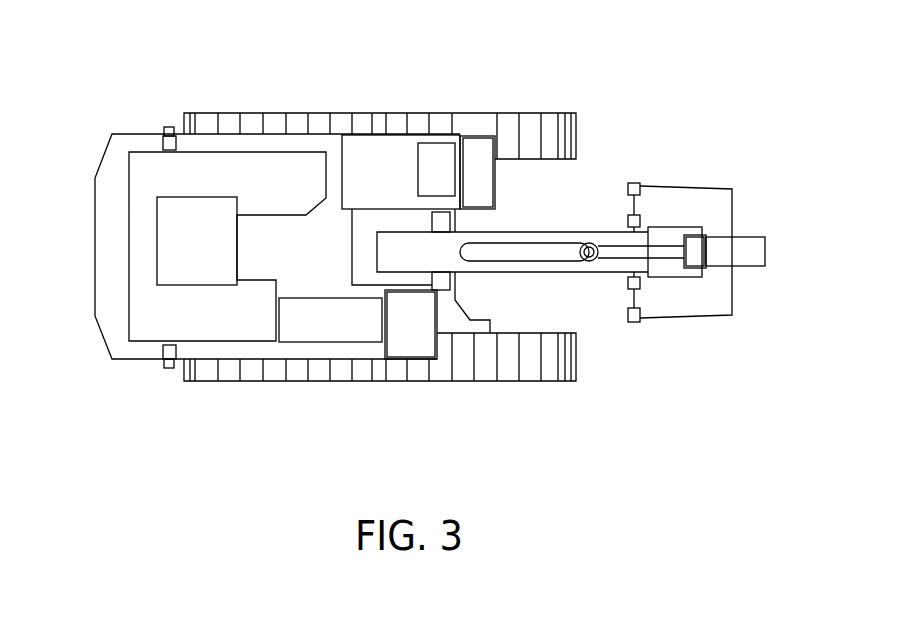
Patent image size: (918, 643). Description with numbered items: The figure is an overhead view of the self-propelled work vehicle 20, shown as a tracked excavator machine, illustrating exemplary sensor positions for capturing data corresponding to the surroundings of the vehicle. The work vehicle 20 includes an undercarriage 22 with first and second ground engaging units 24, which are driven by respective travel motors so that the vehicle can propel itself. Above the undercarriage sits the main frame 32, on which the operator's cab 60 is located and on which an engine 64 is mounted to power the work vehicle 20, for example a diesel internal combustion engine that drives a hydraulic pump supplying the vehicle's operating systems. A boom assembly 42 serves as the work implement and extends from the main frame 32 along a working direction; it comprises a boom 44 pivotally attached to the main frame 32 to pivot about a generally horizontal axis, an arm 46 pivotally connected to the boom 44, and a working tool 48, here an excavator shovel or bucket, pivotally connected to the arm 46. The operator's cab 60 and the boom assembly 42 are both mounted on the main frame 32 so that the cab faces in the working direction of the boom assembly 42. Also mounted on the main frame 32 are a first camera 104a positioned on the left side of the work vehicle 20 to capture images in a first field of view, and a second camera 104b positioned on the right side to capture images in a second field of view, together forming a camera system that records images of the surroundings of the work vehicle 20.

The work vehicle 20 is at (772, 138).
The undercarriage 22 is at (417, 234).
The ground engaging units 24 is at (545, 113).
The main frame 32 is at (108, 193).
The boom assembly 42 is at (602, 318).
The boom 44 is at (590, 232).
The arm 46 is at (765, 252).
The working tool 48 is at (670, 186).
The operator's cab 60 is at (407, 165).
The engine 64 is at (183, 255).
The first camera 104a is at (168, 127).
The second camera 104b is at (167, 367).